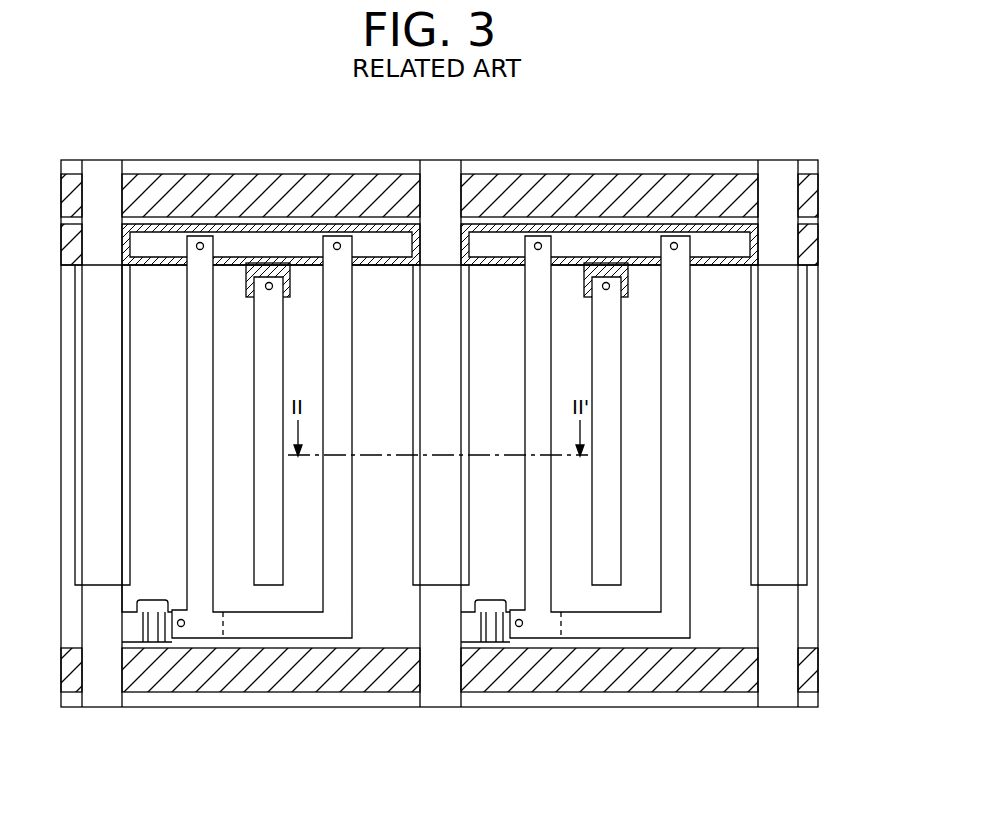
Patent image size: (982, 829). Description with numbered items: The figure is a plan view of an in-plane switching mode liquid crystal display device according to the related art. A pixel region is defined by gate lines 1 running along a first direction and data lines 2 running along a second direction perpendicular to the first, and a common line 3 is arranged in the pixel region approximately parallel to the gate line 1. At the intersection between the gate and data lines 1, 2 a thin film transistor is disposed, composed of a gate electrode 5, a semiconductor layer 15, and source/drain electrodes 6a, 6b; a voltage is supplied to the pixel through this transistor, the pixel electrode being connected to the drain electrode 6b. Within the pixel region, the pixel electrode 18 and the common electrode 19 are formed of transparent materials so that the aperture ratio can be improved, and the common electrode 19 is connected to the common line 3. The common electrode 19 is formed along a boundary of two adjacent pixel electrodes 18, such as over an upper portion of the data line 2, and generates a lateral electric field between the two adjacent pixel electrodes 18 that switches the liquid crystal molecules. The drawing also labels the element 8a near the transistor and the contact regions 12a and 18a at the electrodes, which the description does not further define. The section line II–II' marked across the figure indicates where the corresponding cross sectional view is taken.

The gate line 1 is at (812, 195).
The data line 2 is at (778, 703).
The common line 3 is at (812, 248).
The gate electrode 5 is at (140, 602).
The source electrode 6a is at (142, 638).
The drain electrode 6b is at (165, 640).
The semiconductor layer 15 is at (150, 640).
The drain electrode 8a is at (183, 627).
The contact hole 12a is at (606, 282).
The contact hole 18a is at (674, 242).
The pixel electrode 18 is at (682, 449).
The common electrode 19 is at (803, 383).